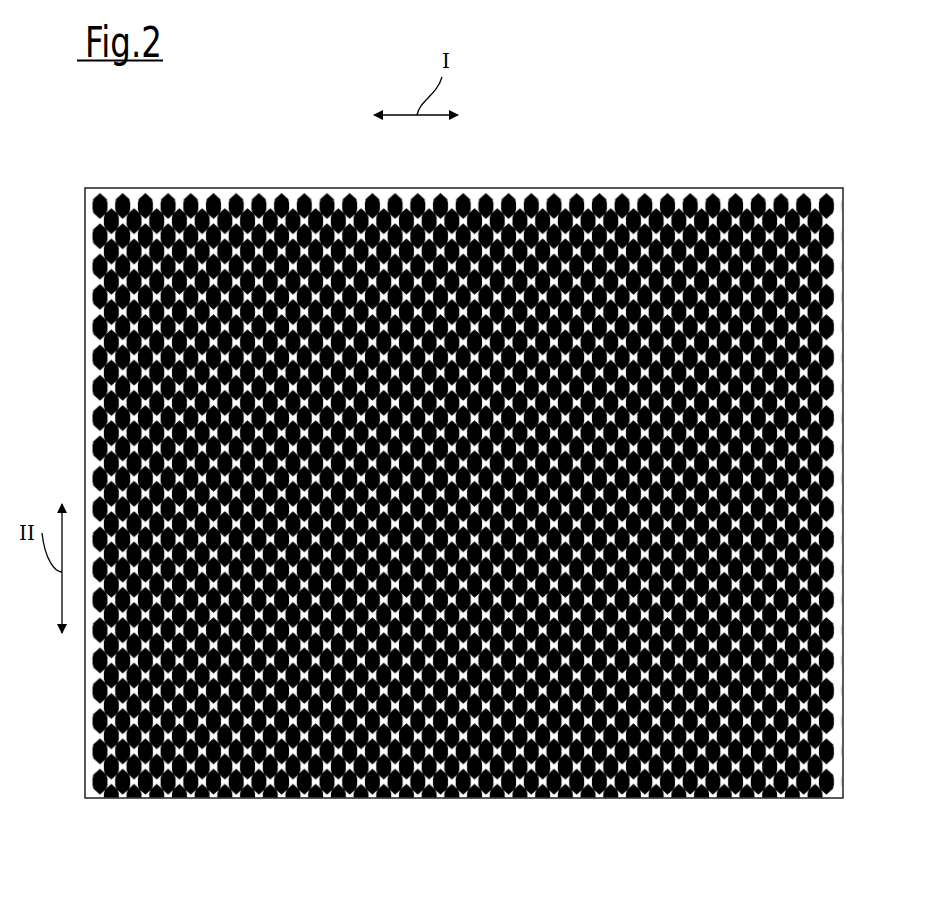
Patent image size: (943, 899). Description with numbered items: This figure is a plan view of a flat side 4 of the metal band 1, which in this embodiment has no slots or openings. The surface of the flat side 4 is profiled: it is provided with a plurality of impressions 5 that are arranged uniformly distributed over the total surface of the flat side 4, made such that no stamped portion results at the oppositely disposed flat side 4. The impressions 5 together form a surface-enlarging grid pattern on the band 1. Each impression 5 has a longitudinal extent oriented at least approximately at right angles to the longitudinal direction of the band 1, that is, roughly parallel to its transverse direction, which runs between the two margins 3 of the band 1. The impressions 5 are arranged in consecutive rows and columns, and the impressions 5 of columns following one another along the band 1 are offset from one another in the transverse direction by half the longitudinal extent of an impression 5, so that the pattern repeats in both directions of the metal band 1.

The metal band 1 is at (455, 475).
The margin 3 is at (85, 228).
The flat side 4 is at (680, 198).
The impressions 5 is at (347, 195).